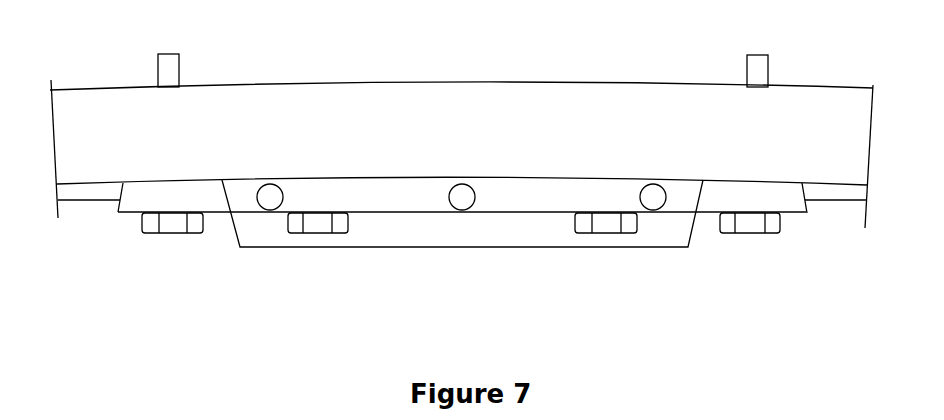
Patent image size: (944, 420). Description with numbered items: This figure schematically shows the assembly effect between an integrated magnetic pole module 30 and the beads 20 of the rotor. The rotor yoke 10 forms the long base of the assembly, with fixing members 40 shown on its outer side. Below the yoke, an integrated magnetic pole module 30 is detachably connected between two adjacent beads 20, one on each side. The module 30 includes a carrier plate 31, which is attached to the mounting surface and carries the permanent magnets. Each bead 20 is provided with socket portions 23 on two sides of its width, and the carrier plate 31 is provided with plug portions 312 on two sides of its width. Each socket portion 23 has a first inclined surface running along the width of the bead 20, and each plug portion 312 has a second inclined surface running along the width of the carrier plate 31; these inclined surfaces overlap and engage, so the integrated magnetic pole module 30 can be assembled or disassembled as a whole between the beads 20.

The rotor yoke 10 is at (418, 102).
The bead 20 is at (137, 212).
The socket portion 23 is at (118, 190).
The integrated magnetic pole module 30 is at (437, 248).
The carrier plate 31 is at (500, 193).
The plug portion 312 is at (228, 195).
The fixing member 40 is at (175, 72).